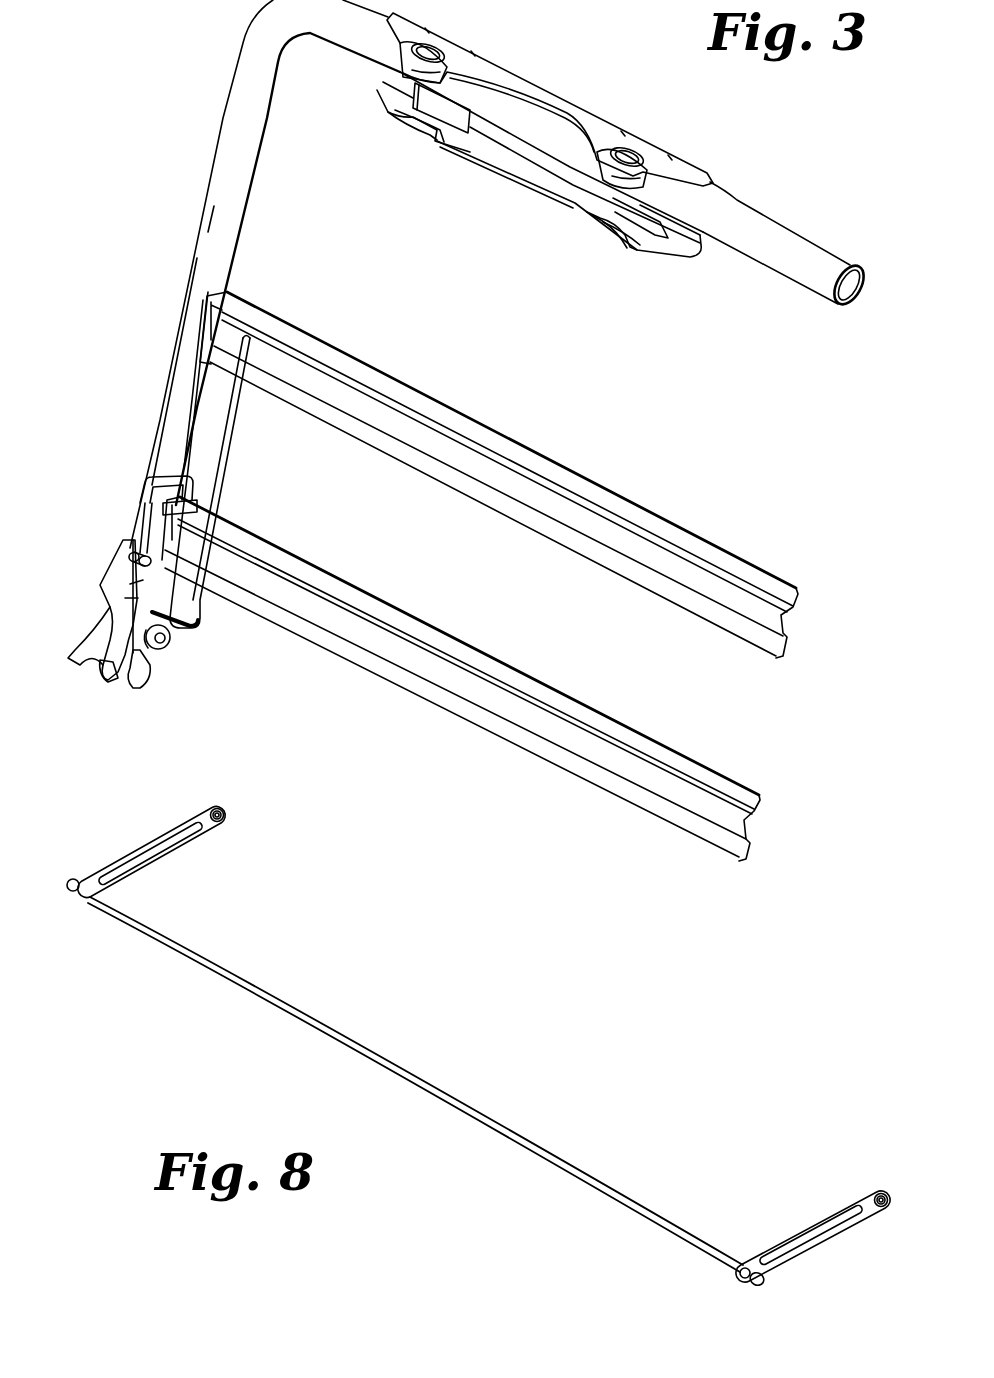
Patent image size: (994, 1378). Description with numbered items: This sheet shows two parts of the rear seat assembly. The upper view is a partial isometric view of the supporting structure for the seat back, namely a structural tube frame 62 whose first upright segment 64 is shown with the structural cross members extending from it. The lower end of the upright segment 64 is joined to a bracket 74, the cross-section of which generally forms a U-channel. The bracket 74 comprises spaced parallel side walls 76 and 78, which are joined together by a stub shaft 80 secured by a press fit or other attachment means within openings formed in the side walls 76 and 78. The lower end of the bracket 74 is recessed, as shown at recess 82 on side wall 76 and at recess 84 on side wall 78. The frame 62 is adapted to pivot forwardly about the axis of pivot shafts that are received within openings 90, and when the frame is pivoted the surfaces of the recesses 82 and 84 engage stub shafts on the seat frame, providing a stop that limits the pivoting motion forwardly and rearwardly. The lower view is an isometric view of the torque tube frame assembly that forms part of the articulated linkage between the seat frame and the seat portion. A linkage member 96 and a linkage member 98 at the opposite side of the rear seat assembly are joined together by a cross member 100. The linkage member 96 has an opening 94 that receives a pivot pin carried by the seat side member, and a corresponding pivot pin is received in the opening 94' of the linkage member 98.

In FIG. 3, the structural tube frame 62 is at (197, 403).
In FIG. 3, the first upright segment 64 is at (177, 457).
In FIG. 3, the bracket 74 is at (157, 590).
In FIG. 3, the side wall 76 is at (123, 583).
In FIG. 3, the side wall 78 is at (113, 607).
In FIG. 3, the stub shaft 80 is at (127, 553).
In FIG. 3, the recess 82 is at (133, 675).
In FIG. 3, the recess 84 is at (110, 673).
In FIG. 3, the opening 90 is at (170, 640).
In FIG. 8, the opening 94 is at (897, 1237).
In FIG. 8, the opening 94' is at (264, 842).
In FIG. 8, the linkage member 96 is at (802, 1254).
In FIG. 8, the linkage member 98 is at (152, 858).
In FIG. 8, the cross member 100 is at (362, 1048).